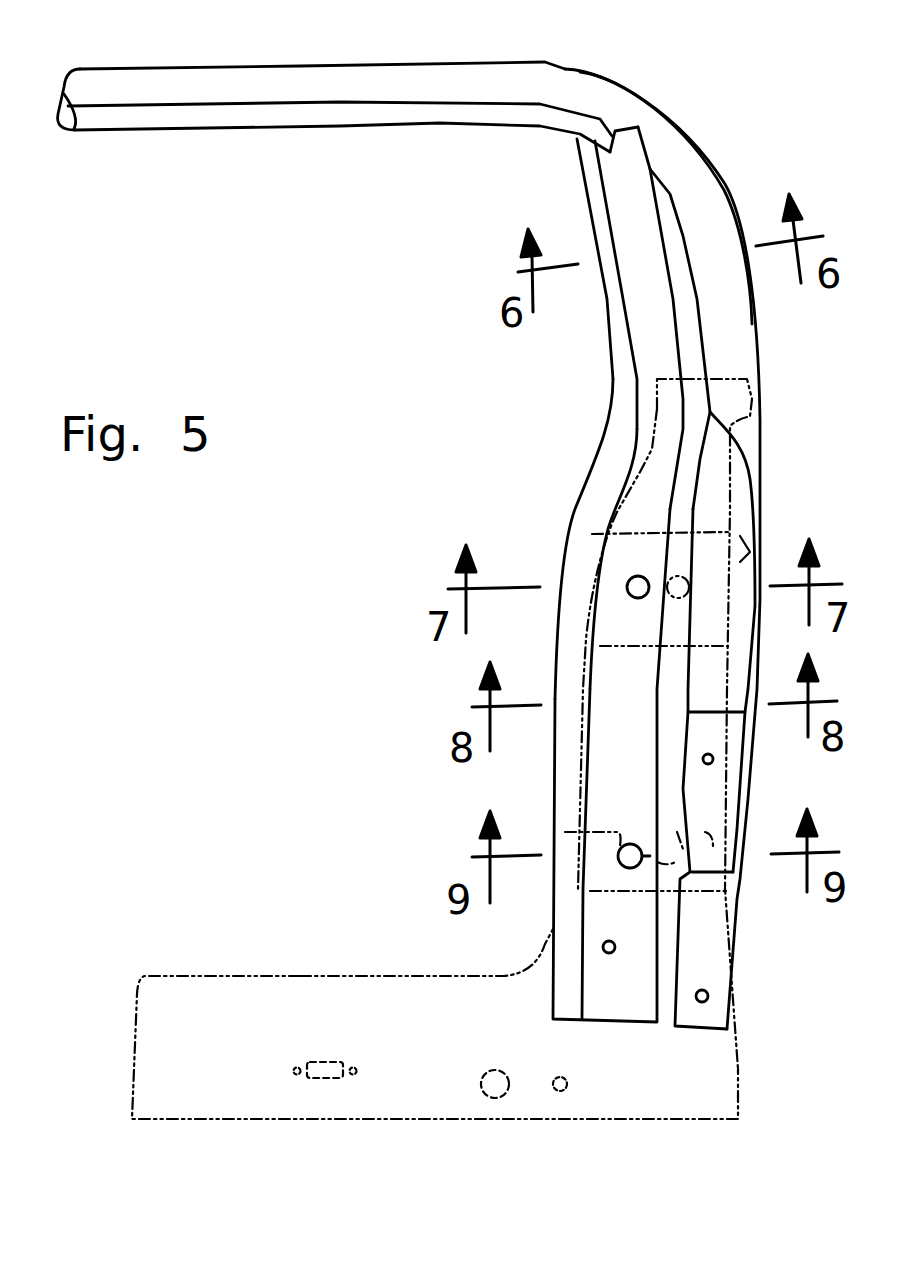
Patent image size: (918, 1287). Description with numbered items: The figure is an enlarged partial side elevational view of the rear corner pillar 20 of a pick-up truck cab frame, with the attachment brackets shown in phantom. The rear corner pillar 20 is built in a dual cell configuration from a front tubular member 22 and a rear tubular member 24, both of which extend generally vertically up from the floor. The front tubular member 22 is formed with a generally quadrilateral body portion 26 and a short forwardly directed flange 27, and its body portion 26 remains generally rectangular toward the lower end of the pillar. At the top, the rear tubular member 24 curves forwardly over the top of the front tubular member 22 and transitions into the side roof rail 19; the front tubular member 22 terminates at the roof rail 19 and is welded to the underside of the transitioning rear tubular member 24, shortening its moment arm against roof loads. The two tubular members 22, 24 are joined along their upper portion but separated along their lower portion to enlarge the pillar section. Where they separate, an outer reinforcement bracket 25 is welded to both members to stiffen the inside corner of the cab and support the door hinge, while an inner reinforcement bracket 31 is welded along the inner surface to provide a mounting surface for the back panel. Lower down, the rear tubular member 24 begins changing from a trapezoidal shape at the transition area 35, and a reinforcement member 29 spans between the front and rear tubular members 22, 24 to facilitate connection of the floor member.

The side roof rail 19 is at (273, 118).
The rear corner pillar 20 is at (698, 78).
The front tubular member 22 is at (603, 193).
The rear tubular member 24 is at (677, 167).
The outer reinforcement bracket 25 is at (700, 893).
The body portion 26 is at (600, 763).
The forwardly directed flange 27 is at (585, 504).
The reinforcement member 29 is at (300, 977).
The inner reinforcement bracket 31 is at (655, 410).
The transition area 35 is at (733, 778).